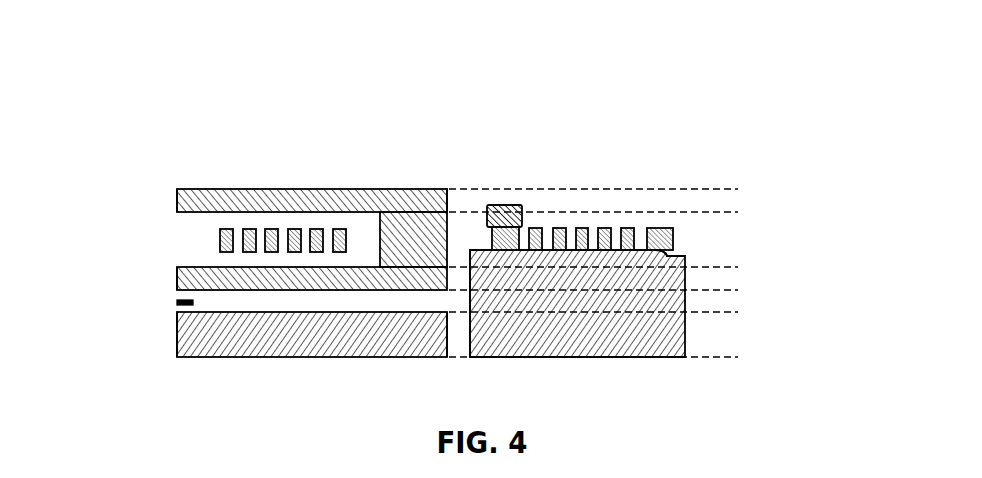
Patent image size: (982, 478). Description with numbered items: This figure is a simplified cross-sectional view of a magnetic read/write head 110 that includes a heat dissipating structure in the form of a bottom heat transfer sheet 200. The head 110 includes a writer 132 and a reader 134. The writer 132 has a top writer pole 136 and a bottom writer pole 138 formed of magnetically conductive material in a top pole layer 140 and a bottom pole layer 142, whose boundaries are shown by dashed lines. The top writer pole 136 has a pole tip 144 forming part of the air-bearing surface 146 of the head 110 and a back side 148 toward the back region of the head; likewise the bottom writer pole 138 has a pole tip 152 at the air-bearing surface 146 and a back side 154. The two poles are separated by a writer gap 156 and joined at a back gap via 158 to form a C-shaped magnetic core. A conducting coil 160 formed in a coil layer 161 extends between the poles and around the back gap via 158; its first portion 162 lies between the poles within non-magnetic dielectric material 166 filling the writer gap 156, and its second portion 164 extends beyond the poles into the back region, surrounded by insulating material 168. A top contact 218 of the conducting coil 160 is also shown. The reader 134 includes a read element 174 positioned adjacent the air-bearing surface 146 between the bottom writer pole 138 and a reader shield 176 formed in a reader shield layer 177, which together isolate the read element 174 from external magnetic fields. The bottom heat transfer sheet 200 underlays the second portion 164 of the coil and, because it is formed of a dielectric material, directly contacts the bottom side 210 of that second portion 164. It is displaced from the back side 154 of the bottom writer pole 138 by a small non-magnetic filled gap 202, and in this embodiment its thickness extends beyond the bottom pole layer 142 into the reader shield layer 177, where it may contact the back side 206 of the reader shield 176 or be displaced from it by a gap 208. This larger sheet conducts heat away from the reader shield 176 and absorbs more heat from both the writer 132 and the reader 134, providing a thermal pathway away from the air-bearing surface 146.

The read/write head 110 is at (523, 111).
The writer 132 is at (288, 188).
The reader 134 is at (257, 379).
The top writer pole 136 is at (289, 189).
The bottom writer pole 138 is at (183, 270).
The top pole layer 140 is at (727, 200).
The bottom pole layer 142 is at (733, 276).
The pole tip 144 is at (177, 200).
The air-bearing surface 146 is at (165, 357).
The back side 148 is at (449, 201).
The pole tip 152 is at (177, 282).
The back side 154 is at (452, 282).
The writer gap 156 is at (188, 236).
The back gap via 158 is at (413, 227).
The conducting coil 160 is at (622, 211).
The coil layer 161 is at (730, 228).
The first portion 162 is at (250, 217).
The second portion 164 is at (585, 212).
The non-magnetic dielectric material 166 is at (193, 220).
The insulating material 168 is at (545, 218).
The read element 174 is at (177, 302).
The reader shield 176 is at (290, 348).
The reader shield layer 177 is at (730, 335).
The bottom heat transfer sheet 200 is at (640, 261).
The gap 202 is at (460, 280).
The back side 206 is at (450, 344).
The gap 208 is at (465, 348).
The bottom side 210 is at (685, 256).
The top contact 218 is at (512, 205).